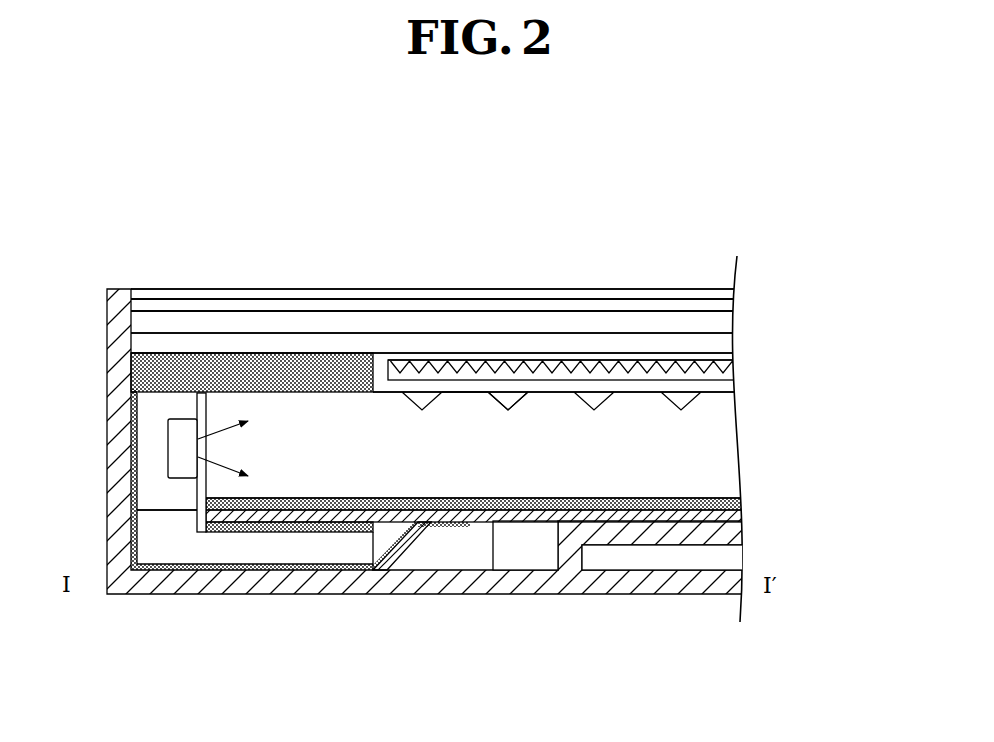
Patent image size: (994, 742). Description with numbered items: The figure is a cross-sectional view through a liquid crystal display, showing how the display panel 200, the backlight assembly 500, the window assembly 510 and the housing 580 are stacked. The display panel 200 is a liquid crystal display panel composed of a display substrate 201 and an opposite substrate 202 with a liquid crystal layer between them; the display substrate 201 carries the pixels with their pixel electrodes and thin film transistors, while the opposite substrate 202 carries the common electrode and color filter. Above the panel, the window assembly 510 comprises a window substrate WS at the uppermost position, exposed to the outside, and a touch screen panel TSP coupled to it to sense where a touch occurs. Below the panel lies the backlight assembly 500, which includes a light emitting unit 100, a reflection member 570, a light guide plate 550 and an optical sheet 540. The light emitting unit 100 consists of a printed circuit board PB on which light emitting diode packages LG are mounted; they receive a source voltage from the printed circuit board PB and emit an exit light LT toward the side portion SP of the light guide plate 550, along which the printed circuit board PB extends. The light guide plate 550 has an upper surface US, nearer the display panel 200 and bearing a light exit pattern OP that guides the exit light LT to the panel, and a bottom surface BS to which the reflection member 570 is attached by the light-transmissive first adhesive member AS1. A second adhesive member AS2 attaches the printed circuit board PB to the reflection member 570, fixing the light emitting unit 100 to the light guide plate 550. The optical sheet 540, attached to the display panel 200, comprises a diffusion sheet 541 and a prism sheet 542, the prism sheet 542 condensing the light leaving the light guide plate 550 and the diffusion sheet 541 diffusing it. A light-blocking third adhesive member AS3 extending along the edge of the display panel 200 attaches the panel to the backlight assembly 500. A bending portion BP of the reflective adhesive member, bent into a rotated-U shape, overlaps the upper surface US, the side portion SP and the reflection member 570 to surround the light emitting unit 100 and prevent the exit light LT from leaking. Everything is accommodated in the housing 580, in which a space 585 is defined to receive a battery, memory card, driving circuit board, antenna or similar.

The light emitting unit 100 is at (267, 663).
The light emitting diode packages LG is at (183, 467).
The printed circuit board PB is at (250, 553).
The second adhesive member AS2 is at (300, 527).
The side portion SP is at (200, 397).
The bending portion BP is at (135, 457).
The exit light LT is at (223, 463).
The third adhesive member AS3 is at (140, 369).
The display panel 200 is at (815, 312).
The display substrate 201 is at (713, 343).
The opposite substrate 202 is at (713, 322).
The window assembly 510 is at (705, 218).
The window substrate WS is at (614, 295).
The touch screen panel TSP is at (682, 305).
The upper surface US is at (452, 392).
The light exit pattern OP is at (508, 409).
The optical sheet 540 is at (815, 360).
The diffusion sheet 541 is at (715, 359).
The prism sheet 542 is at (715, 378).
The light guide plate 550 is at (727, 453).
The backlight assembly 500 is at (870, 375).
The first adhesive member AS1 is at (743, 502).
The reflection member 570 is at (730, 515).
The housing 580 is at (403, 583).
The space 585 is at (618, 557).
The bottom surface BS is at (495, 498).